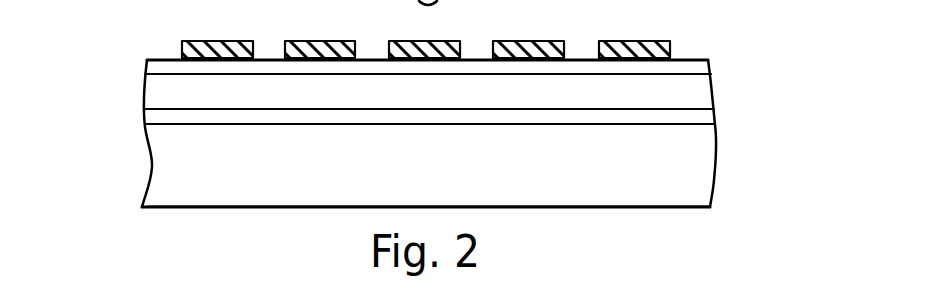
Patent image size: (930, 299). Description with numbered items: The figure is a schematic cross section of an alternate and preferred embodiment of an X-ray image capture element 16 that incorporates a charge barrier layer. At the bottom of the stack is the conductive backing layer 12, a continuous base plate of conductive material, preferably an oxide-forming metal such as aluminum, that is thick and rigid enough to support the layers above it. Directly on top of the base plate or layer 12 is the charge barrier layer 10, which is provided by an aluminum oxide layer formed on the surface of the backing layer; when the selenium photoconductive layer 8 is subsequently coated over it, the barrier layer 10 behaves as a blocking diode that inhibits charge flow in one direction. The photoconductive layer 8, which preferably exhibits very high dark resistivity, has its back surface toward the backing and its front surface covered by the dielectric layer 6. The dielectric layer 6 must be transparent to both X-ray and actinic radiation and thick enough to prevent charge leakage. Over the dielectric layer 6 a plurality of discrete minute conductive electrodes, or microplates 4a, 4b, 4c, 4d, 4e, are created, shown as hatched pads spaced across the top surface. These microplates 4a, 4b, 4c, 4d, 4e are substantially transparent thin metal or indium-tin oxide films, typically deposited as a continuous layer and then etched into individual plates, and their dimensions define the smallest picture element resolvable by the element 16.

The microplate 4a is at (216, 41).
The microplate 4b is at (322, 41).
The microplate 4c is at (430, 41).
The microplate 4d is at (535, 41).
The microplate 4e is at (640, 41).
The dielectric layer 6 is at (692, 69).
The photoconductive layer 8 is at (678, 92).
The charge barrier layer 10 is at (690, 116).
The conductive backing layer 12 is at (688, 175).
The X-ray image capture element 16 is at (150, 163).